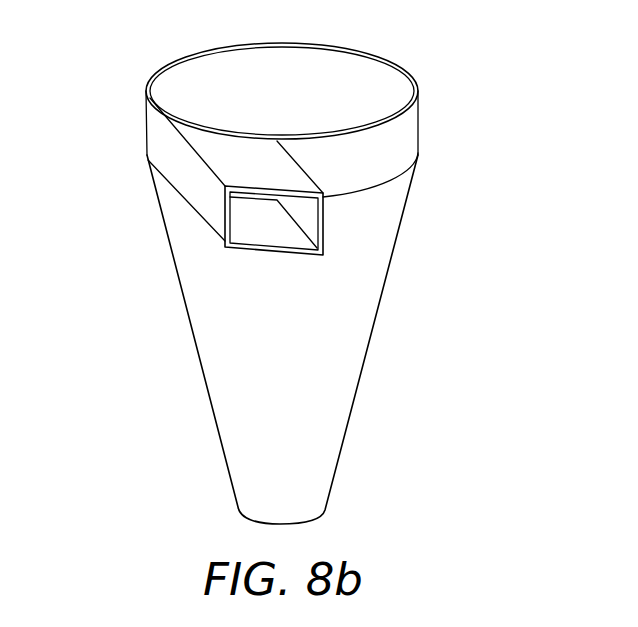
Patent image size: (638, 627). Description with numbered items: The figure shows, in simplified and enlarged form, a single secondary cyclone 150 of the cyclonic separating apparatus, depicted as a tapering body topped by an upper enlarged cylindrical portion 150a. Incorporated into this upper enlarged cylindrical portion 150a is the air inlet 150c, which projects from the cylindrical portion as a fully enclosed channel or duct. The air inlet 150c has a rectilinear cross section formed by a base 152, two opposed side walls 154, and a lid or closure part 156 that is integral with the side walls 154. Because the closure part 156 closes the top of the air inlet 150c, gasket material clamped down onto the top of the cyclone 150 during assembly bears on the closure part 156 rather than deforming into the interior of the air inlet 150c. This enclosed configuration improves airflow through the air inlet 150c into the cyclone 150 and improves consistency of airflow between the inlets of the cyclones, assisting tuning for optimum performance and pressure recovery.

The cyclone 150 is at (382, 302).
The upper enlarged cylindrical portion 150a is at (418, 124).
The air inlet 150c is at (183, 178).
The base 152 is at (277, 255).
The side walls 154 is at (227, 217).
The closure part 156 is at (252, 166).